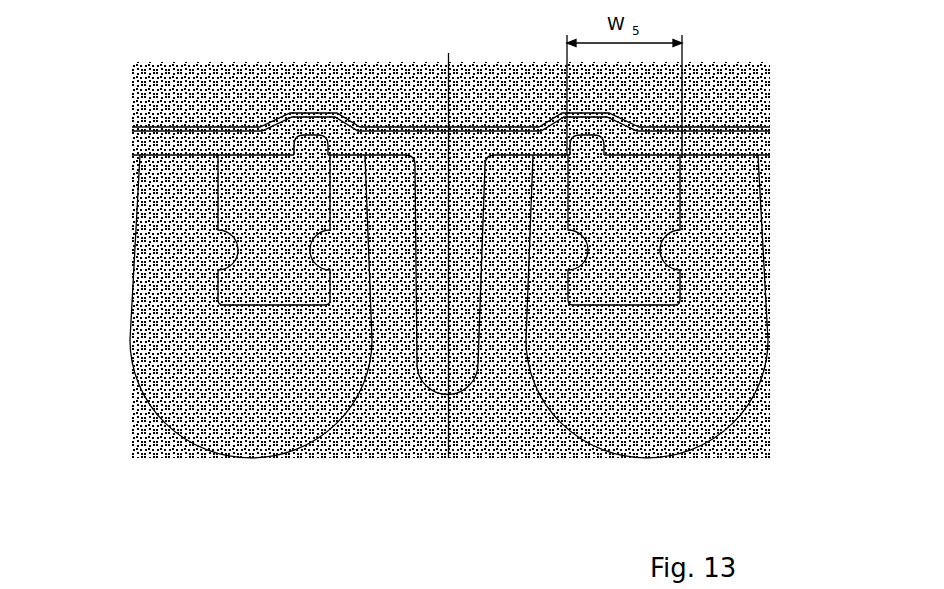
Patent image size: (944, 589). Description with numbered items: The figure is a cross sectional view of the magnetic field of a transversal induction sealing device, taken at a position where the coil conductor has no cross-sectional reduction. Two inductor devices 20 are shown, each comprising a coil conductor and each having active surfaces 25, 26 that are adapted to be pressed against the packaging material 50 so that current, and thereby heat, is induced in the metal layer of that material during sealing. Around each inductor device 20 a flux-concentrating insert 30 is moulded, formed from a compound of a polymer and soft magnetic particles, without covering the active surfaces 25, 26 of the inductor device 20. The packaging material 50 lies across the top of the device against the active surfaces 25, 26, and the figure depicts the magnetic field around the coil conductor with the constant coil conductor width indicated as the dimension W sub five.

The inductor device 20 is at (258, 202).
The active surface 25 is at (258, 155).
The active surface 26 is at (312, 133).
The flux-concentrating insert 30 is at (638, 447).
The packaging material 50 is at (149, 128).